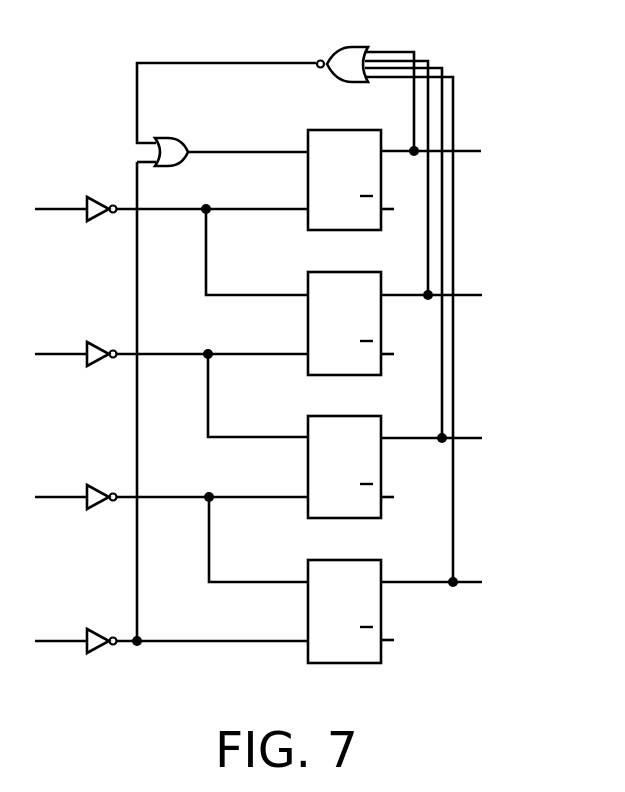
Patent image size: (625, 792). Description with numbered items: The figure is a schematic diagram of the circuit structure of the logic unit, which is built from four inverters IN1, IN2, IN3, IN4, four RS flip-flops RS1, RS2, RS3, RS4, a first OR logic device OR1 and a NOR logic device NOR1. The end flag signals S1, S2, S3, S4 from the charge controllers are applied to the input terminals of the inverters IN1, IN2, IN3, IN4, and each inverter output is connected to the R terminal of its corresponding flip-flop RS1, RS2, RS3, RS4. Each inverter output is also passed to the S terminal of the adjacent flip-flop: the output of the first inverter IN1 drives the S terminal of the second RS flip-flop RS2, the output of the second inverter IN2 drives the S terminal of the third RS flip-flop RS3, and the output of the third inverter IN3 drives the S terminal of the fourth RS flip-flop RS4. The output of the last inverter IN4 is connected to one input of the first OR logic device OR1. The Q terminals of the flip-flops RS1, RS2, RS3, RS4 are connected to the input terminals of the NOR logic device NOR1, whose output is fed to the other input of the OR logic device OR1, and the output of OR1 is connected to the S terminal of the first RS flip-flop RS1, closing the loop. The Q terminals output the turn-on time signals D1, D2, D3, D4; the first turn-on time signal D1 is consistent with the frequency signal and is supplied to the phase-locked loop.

The NOR logic device NOR1 is at (345, 50).
The first OR logic device OR1 is at (174, 139).
The first RS flip-flop RS1 is at (351, 168).
The second RS flip-flop RS2 is at (351, 312).
The third RS flip-flop RS3 is at (351, 455).
The fourth RS flip-flop RS4 is at (351, 600).
The first inverter IN1 is at (197, 227).
The second inverter IN2 is at (197, 372).
The third inverter IN3 is at (197, 515).
The fourth inverter IN4 is at (197, 659).
The first end flag signal S1 is at (61, 193).
The second end flag signal S2 is at (61, 338).
The third end flag signal S3 is at (61, 481).
The fourth end flag signal S4 is at (61, 625).
The first turn-on time signal D1 is at (452, 136).
The second turn-on time signal D2 is at (438, 279).
The third turn-on time signal D3 is at (438, 423).
The fourth turn-on time signal D4 is at (436, 567).